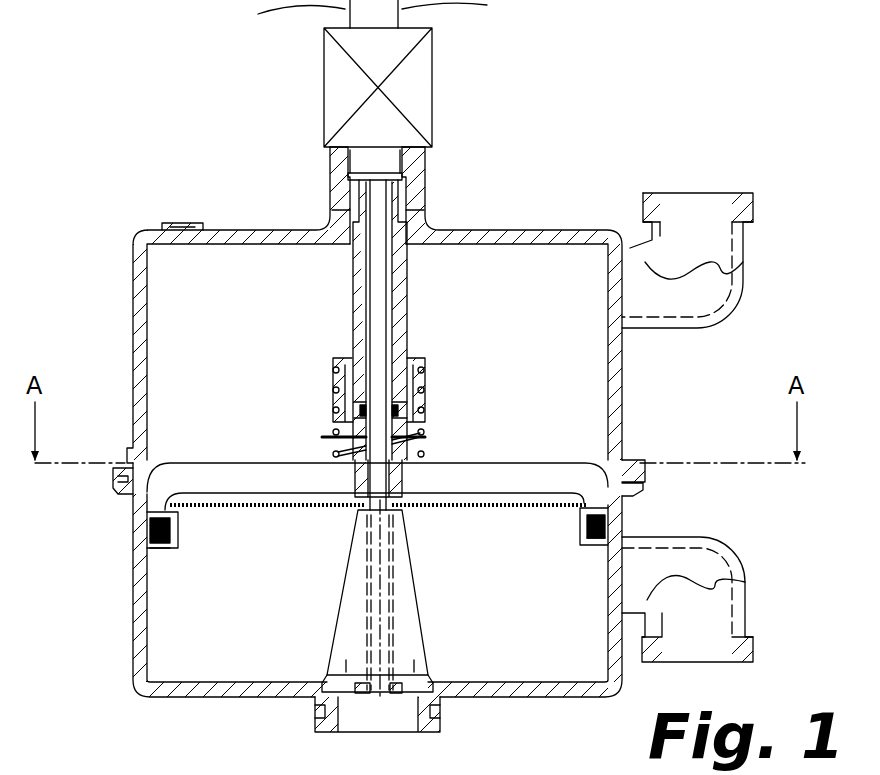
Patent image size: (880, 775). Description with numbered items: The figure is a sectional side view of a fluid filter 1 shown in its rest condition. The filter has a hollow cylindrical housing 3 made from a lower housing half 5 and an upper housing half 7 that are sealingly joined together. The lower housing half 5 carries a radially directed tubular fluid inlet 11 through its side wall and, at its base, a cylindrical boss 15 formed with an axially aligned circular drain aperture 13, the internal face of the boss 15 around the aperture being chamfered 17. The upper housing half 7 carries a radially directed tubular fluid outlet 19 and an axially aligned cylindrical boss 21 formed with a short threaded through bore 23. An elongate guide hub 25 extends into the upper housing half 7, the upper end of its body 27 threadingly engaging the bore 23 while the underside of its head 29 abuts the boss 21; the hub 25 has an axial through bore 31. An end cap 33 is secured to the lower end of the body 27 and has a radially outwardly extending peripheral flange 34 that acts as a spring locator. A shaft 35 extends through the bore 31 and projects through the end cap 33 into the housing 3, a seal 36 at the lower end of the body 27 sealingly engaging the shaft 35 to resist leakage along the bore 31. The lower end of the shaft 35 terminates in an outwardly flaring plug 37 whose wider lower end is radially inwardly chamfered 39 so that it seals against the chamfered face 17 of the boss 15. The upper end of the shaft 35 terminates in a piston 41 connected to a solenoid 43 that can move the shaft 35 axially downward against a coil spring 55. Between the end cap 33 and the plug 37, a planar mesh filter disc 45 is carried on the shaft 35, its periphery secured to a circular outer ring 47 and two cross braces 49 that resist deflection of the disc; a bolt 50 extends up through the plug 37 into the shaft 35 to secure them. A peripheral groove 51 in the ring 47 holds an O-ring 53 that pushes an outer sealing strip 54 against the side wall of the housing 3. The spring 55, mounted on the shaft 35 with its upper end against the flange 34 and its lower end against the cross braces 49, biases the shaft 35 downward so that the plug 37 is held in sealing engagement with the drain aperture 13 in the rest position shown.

The fluid filter 1 is at (578, 104).
The housing 3 is at (118, 336).
The lower housing half 5 is at (135, 626).
The upper housing half 7 is at (160, 238).
The fluid inlet 11 is at (740, 578).
The drain aperture 13 is at (398, 726).
The boss 15 is at (441, 722).
The chamfer 17 is at (350, 712).
The fluid outlet 19 is at (736, 268).
The boss 21 is at (440, 223).
The through bore 23 is at (412, 240).
The guide hub 25 is at (312, 175).
The body 27 is at (352, 308).
The head 29 is at (430, 186).
The through bore 31 is at (393, 340).
The end cap 33 is at (418, 404).
The peripheral flange 34 is at (426, 352).
The shaft 35 is at (348, 440).
The seal 36 is at (350, 402).
The plug 37 is at (405, 618).
The chamfer 39 is at (412, 670).
The piston 41 is at (372, 160).
The solenoid 43 is at (416, 71).
The filter disc 45 is at (522, 509).
The outer ring 47 is at (162, 492).
The cross braces 49 is at (228, 470).
The bolt 50 is at (298, 591).
The peripheral groove 51 is at (182, 520).
The O-ring 53 is at (166, 548).
The outer sealing strip 54 is at (152, 530).
The coil spring 55 is at (426, 438).